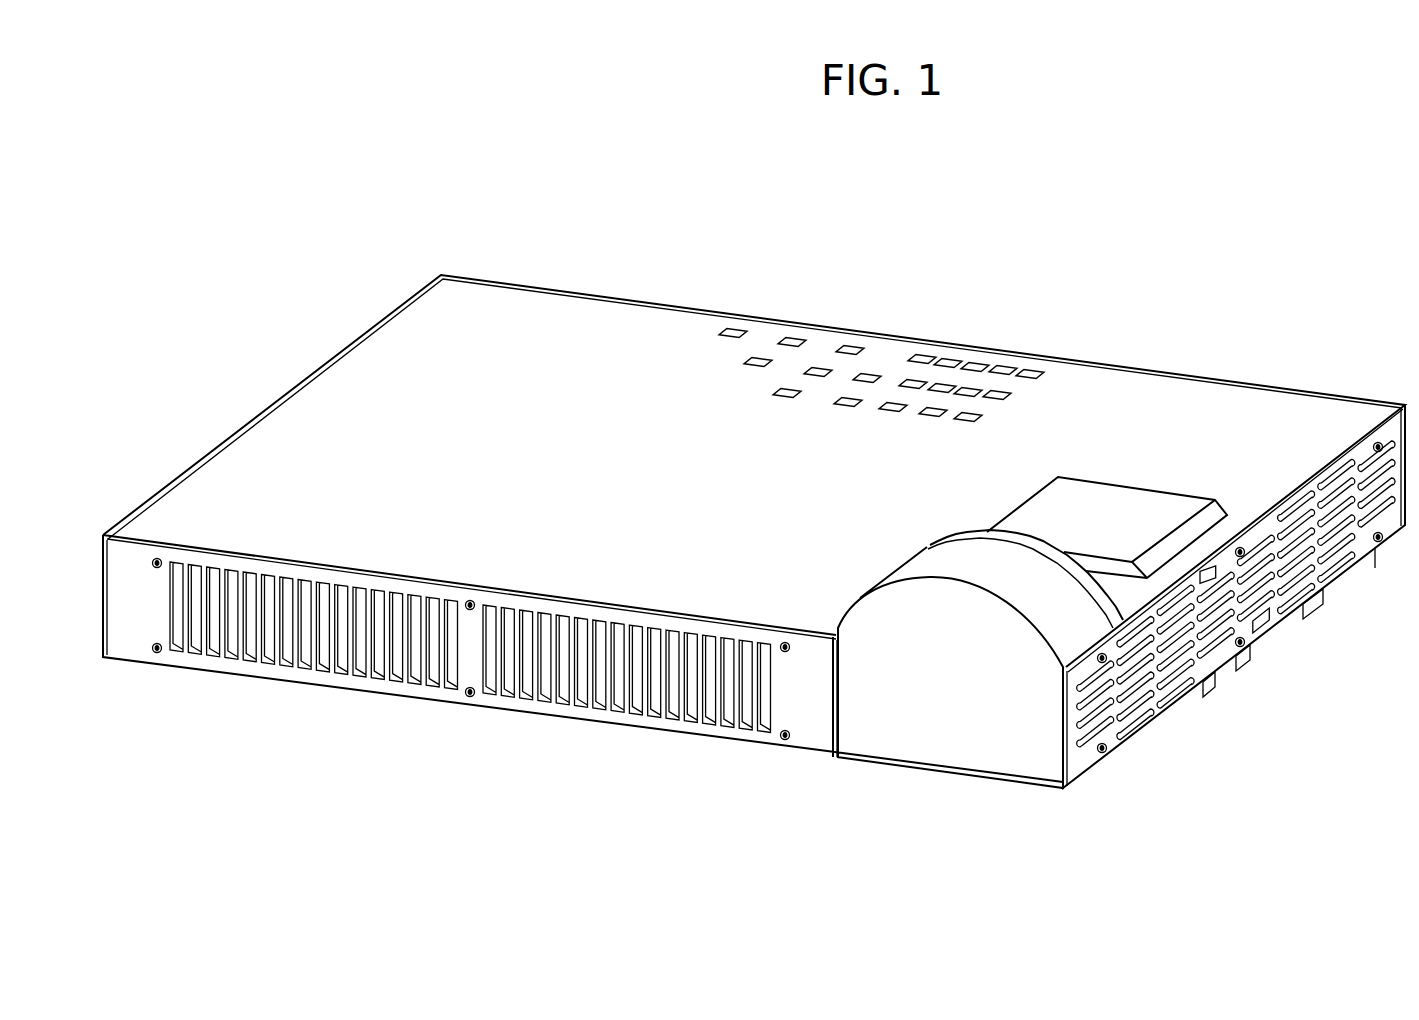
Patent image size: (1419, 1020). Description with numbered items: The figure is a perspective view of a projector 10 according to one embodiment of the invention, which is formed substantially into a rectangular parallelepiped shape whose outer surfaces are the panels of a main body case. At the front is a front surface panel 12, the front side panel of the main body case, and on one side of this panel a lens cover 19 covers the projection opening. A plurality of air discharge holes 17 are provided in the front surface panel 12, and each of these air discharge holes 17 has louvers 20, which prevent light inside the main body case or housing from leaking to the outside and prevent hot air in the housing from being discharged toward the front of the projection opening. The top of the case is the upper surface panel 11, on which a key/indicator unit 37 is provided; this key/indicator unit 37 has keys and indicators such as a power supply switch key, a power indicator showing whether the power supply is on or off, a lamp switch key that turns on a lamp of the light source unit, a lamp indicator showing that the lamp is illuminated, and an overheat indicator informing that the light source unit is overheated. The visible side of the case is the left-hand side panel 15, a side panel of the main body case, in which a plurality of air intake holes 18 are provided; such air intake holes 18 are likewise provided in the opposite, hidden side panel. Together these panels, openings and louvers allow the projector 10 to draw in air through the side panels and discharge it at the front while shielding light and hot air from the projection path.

The projector 10 is at (918, 282).
The upper surface panel 11 is at (535, 307).
The front surface panel 12 is at (817, 712).
The left-hand side panel 15 is at (1347, 580).
The air discharge holes 17 is at (728, 732).
The air intake holes 18 is at (1297, 612).
The lens cover 19 is at (955, 743).
The louvers 20 is at (672, 722).
The key/indicator unit 37 is at (960, 385).